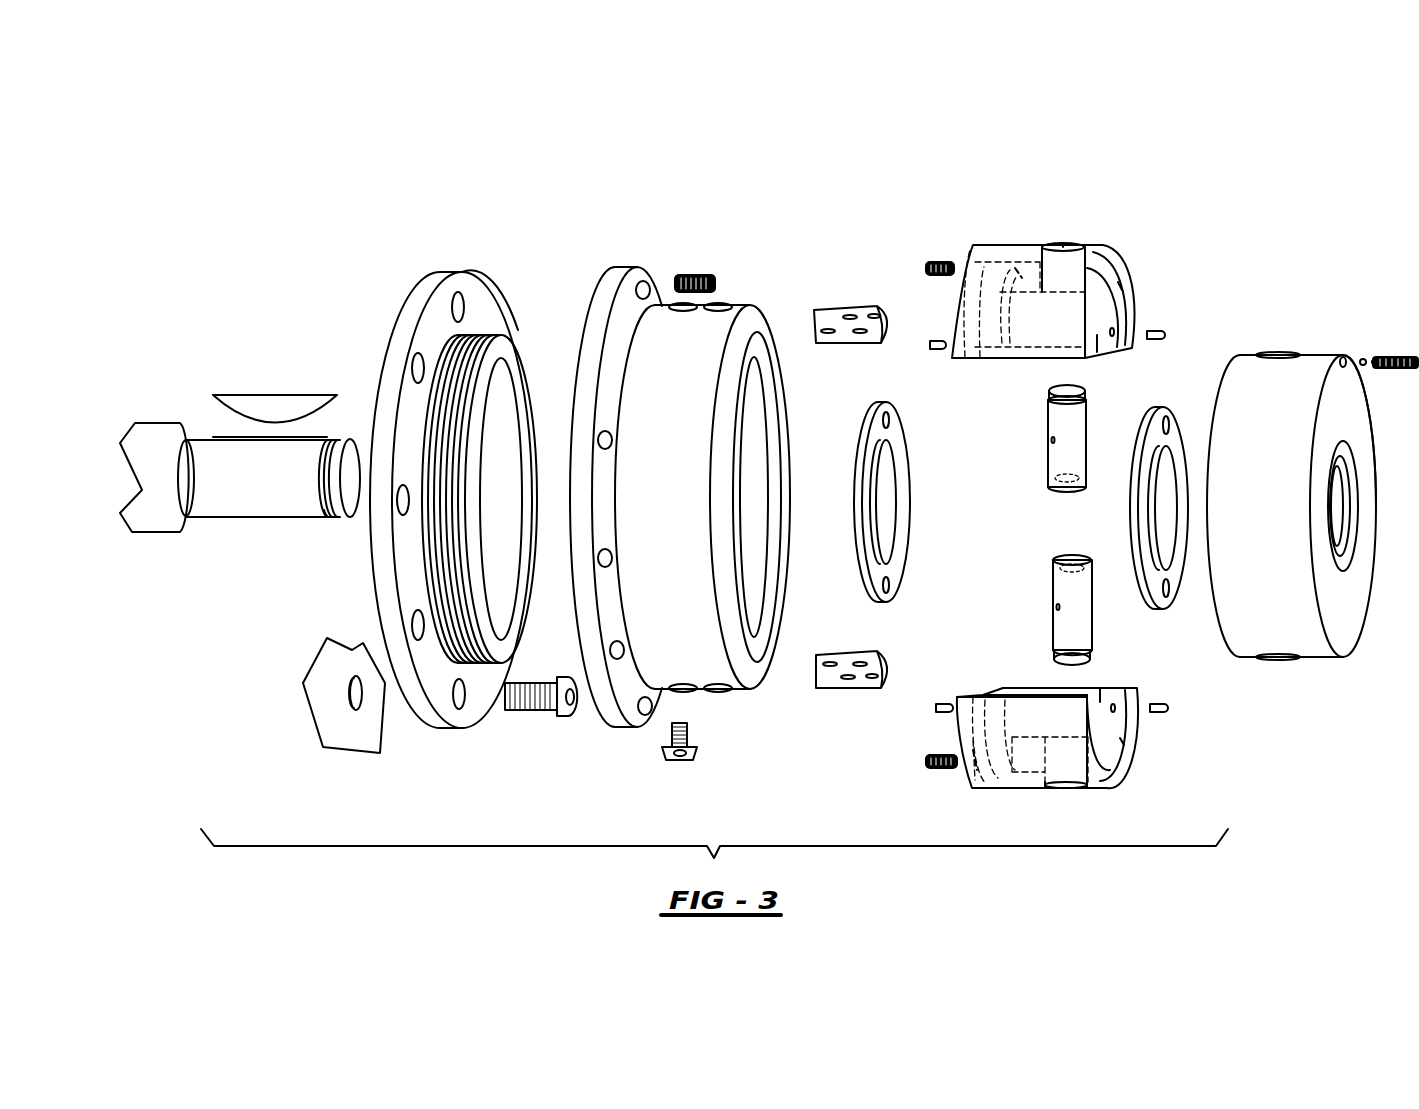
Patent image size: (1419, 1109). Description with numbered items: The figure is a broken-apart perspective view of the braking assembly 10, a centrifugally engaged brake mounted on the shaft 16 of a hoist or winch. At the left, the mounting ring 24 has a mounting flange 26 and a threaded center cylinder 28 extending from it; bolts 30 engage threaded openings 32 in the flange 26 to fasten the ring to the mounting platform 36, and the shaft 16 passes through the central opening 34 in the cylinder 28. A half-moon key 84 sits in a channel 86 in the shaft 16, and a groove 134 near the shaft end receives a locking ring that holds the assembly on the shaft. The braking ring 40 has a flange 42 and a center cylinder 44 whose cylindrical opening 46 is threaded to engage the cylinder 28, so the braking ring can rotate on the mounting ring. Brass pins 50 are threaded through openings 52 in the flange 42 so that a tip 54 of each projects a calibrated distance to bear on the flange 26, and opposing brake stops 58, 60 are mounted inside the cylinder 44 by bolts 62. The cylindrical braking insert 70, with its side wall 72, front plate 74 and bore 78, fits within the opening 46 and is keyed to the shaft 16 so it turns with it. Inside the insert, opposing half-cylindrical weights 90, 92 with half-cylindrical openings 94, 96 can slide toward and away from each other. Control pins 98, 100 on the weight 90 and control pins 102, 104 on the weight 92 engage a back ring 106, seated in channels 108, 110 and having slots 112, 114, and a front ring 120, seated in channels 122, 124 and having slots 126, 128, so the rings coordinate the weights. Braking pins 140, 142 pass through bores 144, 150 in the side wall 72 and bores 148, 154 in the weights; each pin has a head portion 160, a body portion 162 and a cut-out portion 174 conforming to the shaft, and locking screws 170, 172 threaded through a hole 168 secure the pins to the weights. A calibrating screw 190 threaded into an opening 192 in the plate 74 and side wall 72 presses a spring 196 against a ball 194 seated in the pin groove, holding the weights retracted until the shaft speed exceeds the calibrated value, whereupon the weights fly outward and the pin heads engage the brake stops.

The braking assembly 10 is at (835, 165).
The shaft 16 is at (206, 441).
The mounting ring 24 is at (420, 270).
The mounting flange 26 is at (480, 300).
The threaded center cylinder 28 is at (505, 355).
The bolts 30 is at (535, 700).
The threaded openings 32 is at (460, 700).
The central opening 34 is at (500, 440).
The mounting platform 36 is at (330, 673).
The braking ring 40 is at (745, 305).
The flange 42 is at (605, 290).
The center cylinder 44 is at (735, 690).
The cylindrical opening 46 is at (750, 395).
The pins 50 is at (697, 275).
The openings 52 is at (645, 710).
The tip 54 is at (665, 310).
The brake stop 58 is at (822, 310).
The brake stop 60 is at (850, 682).
The bolts 62 is at (688, 755).
The braking insert 70 is at (1307, 660).
The side wall 72 is at (1307, 392).
The front plate 74 is at (1355, 610).
The cylindrical bore 78 is at (1335, 490).
The half-moon key 84 is at (270, 395).
The channel 86 is at (327, 437).
The half-cylindrical weight 90 is at (1115, 240).
The half-cylindrical weight 92 is at (1128, 778).
The half-cylindrical opening 94 is at (1097, 340).
The half-cylindrical opening 96 is at (1100, 702).
The control pin 98 is at (940, 349).
The control pin 100 is at (1160, 330).
The control pin 102 is at (940, 700).
The control pin 104 is at (1170, 695).
The back ring 106 is at (905, 520).
The channel 108 is at (1020, 273).
The channel 110 is at (977, 757).
The slot 112 is at (890, 420).
The slot 114 is at (890, 590).
The front ring 120 is at (1140, 520).
The channel 122 is at (1120, 288).
The channel 124 is at (1122, 740).
The slot 126 is at (1168, 425).
The slot 128 is at (1168, 590).
The groove 134 is at (325, 518).
The braking pin 140 is at (1055, 420).
The braking pin 142 is at (1068, 590).
The bore 144 is at (1275, 355).
The bore 148 is at (1075, 243).
The bore 150 is at (1278, 657).
The bore 154 is at (1067, 785).
The head portion 160 is at (1062, 390).
The body portion 162 is at (1082, 445).
The threaded hole 168 is at (1068, 260).
The locking screw 170 is at (933, 262).
The locking screw 172 is at (935, 765).
The cut-out portion 174 is at (1075, 488).
The calibrating screw 190 is at (1402, 355).
The opening 192 is at (1337, 357).
The ball 194 is at (1358, 355).
The spring 196 is at (1376, 367).